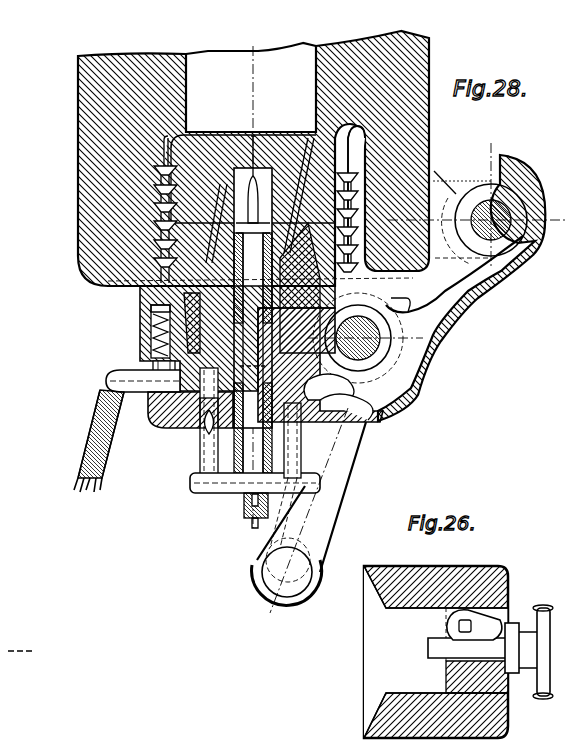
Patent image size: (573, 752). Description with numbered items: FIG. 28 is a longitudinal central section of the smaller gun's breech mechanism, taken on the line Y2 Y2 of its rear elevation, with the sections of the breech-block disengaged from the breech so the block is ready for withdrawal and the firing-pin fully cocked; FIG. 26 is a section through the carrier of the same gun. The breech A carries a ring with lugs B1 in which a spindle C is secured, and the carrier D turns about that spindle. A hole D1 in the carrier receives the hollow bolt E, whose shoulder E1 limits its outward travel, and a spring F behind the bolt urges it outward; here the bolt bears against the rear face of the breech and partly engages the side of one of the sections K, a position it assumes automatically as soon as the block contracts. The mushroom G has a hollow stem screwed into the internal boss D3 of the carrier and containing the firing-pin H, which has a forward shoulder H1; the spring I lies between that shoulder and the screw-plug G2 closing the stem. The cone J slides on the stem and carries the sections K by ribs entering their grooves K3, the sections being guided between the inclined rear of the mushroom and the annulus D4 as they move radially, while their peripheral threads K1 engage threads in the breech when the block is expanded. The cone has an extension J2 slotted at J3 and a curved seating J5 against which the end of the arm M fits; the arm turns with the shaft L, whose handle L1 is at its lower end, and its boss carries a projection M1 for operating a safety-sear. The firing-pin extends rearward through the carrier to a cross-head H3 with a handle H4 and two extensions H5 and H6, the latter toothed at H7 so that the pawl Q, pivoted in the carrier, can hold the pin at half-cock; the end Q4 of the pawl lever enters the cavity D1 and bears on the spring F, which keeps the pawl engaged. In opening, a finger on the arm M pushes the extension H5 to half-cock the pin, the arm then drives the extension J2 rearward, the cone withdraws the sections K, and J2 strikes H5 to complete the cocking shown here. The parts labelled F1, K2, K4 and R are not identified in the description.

In FIG. 28, the breech A is at (253, 158).
In FIG. 28, the lugs B1 is at (480, 204).
In FIG. 28, the spindle C is at (491, 220).
In FIG. 28, the carrier D is at (435, 332).
In FIG. 28, the hole D1 is at (132, 343).
In FIG. 28, the internal boss D3 is at (293, 430).
In FIG. 28, the annulus D4 is at (268, 309).
In FIG. 28, the hollow bolt E is at (132, 287).
In FIG. 28, the shoulder E1 is at (143, 302).
In FIG. 28, the spring F is at (143, 326).
In FIG. 28, the plunger rod F1 is at (145, 338).
In FIG. 28, the mushroom G is at (253, 177).
In FIG. 28, the screw-plug G2 is at (276, 428).
In FIG. 28, the firing-pin H is at (253, 320).
In FIG. 28, the shoulder H1 is at (253, 197).
In FIG. 26, the shoulder H1 is at (474, 646).
In FIG. 28, the cross-head H3 is at (236, 495).
In FIG. 28, the handle H4 is at (244, 516).
In FIG. 28, the extension H5 is at (293, 448).
In FIG. 28, the extension H6 is at (192, 462).
In FIG. 26, the extension H6 is at (529, 652).
In FIG. 28, the teeth H7 is at (192, 440).
In FIG. 26, the teeth H7 is at (452, 662).
In FIG. 28, the spring I is at (254, 299).
In FIG. 28, the cone J is at (252, 245).
In FIG. 28, the extension J2 is at (346, 404).
In FIG. 28, the slot J3 is at (312, 366).
In FIG. 28, the curved surface J5 is at (335, 322).
In FIG. 28, the adjustable sections K is at (173, 209).
In FIG. 28, the threads K1 is at (146, 236).
In FIG. 28, the valve disc K2 is at (146, 214).
In FIG. 28, the groove K3 is at (329, 200).
In FIG. 28, the valve disc K4 is at (333, 223).
In FIG. 28, the shaft L is at (365, 338).
In FIG. 28, the handle L1 is at (309, 510).
In FIG. 28, the arm M is at (327, 387).
In FIG. 28, the projection M1 is at (356, 401).
In FIG. 28, the pawl Q is at (150, 412).
In FIG. 26, the pawl Q is at (463, 618).
In FIG. 28, the lever end Q4 is at (102, 364).
In FIG. 28, the cord R is at (96, 440).
In FIG. 28, the section line Y² Y² Y2 is at (30, 644).